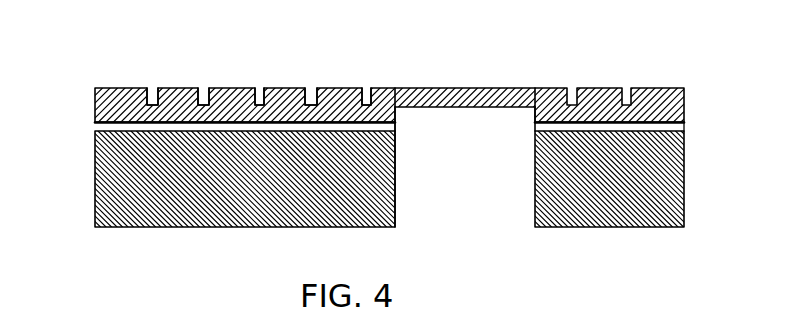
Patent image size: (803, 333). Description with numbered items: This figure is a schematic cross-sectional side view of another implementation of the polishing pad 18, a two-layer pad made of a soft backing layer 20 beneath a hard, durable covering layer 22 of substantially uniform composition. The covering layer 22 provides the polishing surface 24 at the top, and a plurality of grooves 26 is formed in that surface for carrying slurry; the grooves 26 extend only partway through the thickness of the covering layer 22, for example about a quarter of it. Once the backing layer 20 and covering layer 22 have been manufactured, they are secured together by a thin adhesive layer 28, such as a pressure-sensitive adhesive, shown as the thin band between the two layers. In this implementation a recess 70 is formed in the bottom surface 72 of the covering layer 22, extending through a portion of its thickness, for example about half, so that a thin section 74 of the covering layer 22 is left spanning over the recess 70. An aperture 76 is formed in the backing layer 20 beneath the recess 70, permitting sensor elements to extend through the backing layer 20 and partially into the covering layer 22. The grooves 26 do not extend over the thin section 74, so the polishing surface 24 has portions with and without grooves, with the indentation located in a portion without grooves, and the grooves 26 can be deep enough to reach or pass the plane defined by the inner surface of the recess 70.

The polishing pad 18 is at (394, 135).
The backing layer 20 is at (684, 180).
The covering layer 22 is at (684, 109).
The polishing surface 24 is at (552, 87).
The grooves 26 is at (365, 87).
The adhesive layer 28 is at (684, 124).
The recess 70 is at (533, 117).
The bottom surface 72 is at (168, 124).
The thin section 74 is at (441, 87).
The aperture 76 is at (395, 178).